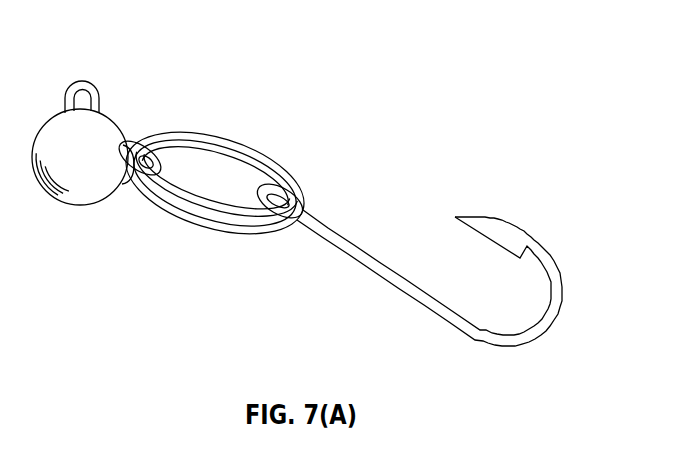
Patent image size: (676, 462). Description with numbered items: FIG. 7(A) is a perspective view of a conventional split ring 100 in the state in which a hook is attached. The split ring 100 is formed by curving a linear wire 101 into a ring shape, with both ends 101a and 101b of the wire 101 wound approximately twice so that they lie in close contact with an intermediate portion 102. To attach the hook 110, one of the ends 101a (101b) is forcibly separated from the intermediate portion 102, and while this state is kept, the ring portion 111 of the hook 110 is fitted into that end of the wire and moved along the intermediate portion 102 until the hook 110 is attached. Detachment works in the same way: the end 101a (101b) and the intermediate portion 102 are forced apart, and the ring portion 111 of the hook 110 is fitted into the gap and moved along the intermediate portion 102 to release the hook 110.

The split ring 100 is at (258, 118).
The wire 101 is at (212, 191).
The end of the wire 101a is at (217, 202).
The end of the wire 101b is at (212, 218).
The intermediate portion 102 is at (193, 208).
The hook 110 is at (407, 260).
The ring portion 111 is at (293, 195).